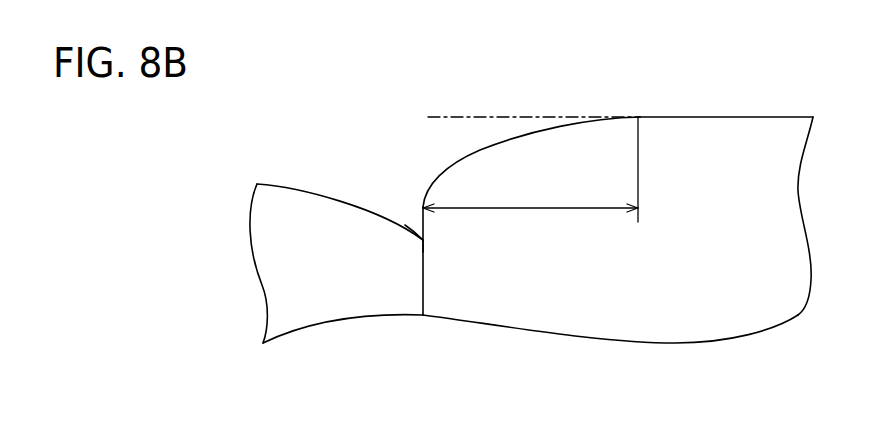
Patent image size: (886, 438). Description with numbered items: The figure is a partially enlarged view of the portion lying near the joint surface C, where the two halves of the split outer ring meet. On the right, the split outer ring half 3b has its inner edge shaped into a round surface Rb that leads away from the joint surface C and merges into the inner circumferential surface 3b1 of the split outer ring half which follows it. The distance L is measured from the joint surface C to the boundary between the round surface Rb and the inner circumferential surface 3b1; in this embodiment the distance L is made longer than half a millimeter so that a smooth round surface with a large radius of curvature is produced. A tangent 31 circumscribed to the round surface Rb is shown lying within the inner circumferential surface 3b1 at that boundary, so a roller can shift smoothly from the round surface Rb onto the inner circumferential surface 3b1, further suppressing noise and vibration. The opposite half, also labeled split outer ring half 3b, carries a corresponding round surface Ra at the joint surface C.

The split outer ring half 3b is at (285, 235).
The inner circumferential surface 3b1 is at (700, 117).
The tangent 31 is at (509, 117).
The round surface Ra is at (423, 240).
The round surface Rb is at (461, 158).
The distance L is at (530, 169).
The joint surface C is at (425, 282).